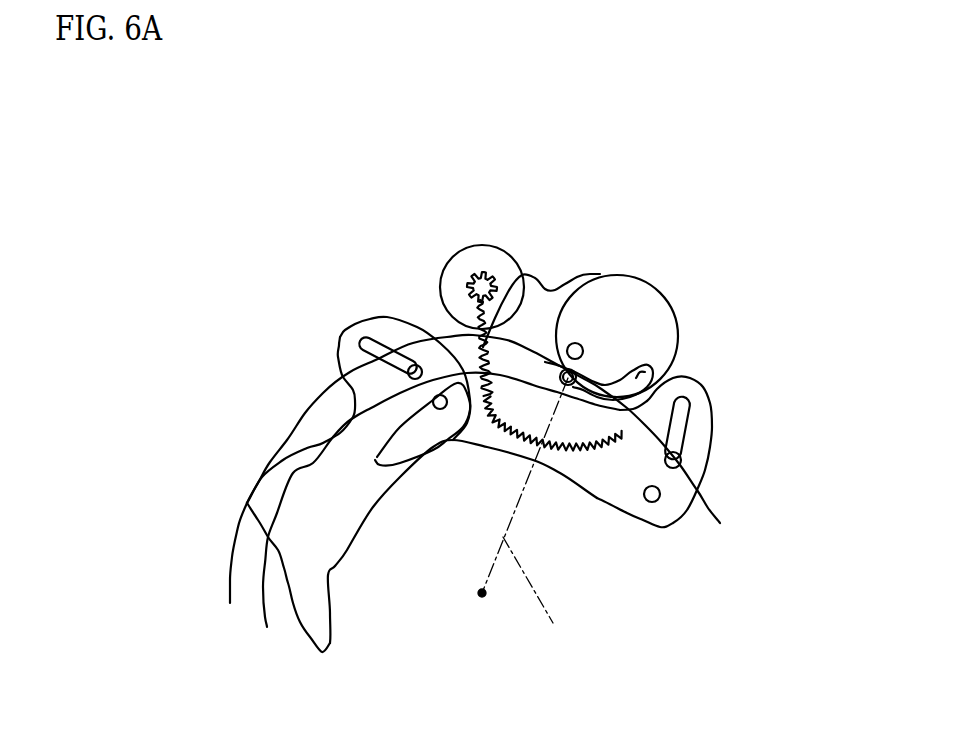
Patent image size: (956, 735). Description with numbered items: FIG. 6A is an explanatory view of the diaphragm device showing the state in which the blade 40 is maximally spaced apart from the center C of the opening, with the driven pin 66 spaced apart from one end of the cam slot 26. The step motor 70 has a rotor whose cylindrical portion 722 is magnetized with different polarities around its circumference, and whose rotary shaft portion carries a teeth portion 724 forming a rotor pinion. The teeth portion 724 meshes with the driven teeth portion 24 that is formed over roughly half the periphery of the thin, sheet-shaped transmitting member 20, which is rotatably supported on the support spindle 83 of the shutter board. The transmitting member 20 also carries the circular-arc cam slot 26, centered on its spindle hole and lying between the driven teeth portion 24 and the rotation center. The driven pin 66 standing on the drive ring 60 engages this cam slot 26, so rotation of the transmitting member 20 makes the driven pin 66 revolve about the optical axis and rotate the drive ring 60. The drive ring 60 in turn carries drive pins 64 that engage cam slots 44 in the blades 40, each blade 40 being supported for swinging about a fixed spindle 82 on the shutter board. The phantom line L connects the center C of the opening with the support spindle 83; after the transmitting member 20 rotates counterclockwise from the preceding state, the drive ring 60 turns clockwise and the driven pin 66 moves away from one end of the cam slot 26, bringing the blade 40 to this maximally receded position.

The transmitting member 20 is at (600, 271).
The driven teeth portion 24 is at (462, 332).
The cam slot 26 is at (655, 360).
The blade 40 is at (347, 550).
The cam slot 44 is at (340, 337).
The drive ring 60 is at (690, 523).
The drive pin 64 is at (363, 343).
The driven pin 66 is at (566, 369).
The step motor 70 is at (474, 244).
The fixed spindle 82 is at (442, 410).
The support spindle 83 is at (580, 345).
The cylindrical portion 722 is at (497, 254).
The teeth portion 724 is at (473, 271).
The center of the opening C is at (482, 593).
The phantom line L is at (525, 510).